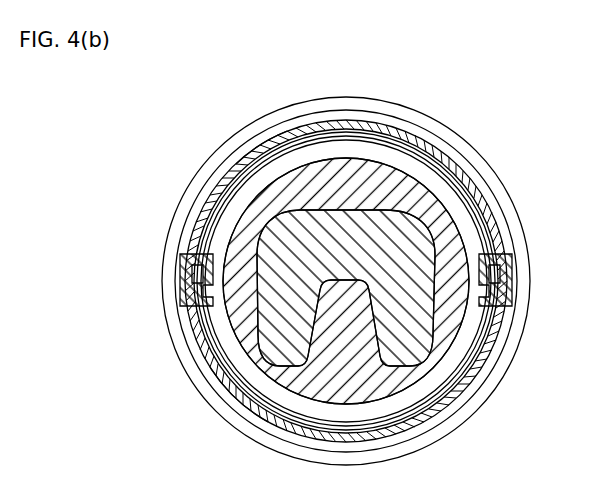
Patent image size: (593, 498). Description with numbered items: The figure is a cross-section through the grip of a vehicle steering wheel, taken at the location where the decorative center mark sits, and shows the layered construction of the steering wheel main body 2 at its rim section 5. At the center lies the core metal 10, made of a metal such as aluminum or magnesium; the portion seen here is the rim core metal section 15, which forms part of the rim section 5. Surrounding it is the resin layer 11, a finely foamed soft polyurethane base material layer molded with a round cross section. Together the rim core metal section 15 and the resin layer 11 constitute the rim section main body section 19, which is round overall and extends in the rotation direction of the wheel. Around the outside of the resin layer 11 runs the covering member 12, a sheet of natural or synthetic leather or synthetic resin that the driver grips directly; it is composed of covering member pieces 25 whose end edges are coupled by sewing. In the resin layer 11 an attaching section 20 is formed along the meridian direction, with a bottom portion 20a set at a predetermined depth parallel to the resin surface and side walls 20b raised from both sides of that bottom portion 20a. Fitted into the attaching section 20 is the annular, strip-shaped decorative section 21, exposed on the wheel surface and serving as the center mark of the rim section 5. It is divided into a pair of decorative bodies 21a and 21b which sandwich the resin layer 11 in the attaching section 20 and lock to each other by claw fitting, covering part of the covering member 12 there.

The steering wheel main body 2 is at (159, 270).
The rim section 5 is at (412, 120).
The core metal 10 is at (368, 157).
The rim core metal section 15 is at (387, 281).
The resin layer 11 is at (440, 238).
The covering member 12 is at (456, 209).
The rim section main body section 19 is at (444, 191).
The attaching section 20 is at (234, 185).
The bottom portion 20a is at (305, 135).
The side walls 20b is at (220, 218).
The decorative section 21 is at (436, 148).
The decorative body 21a is at (262, 143).
The decorative body 21b is at (241, 400).
The covering member piece 25 is at (514, 292).